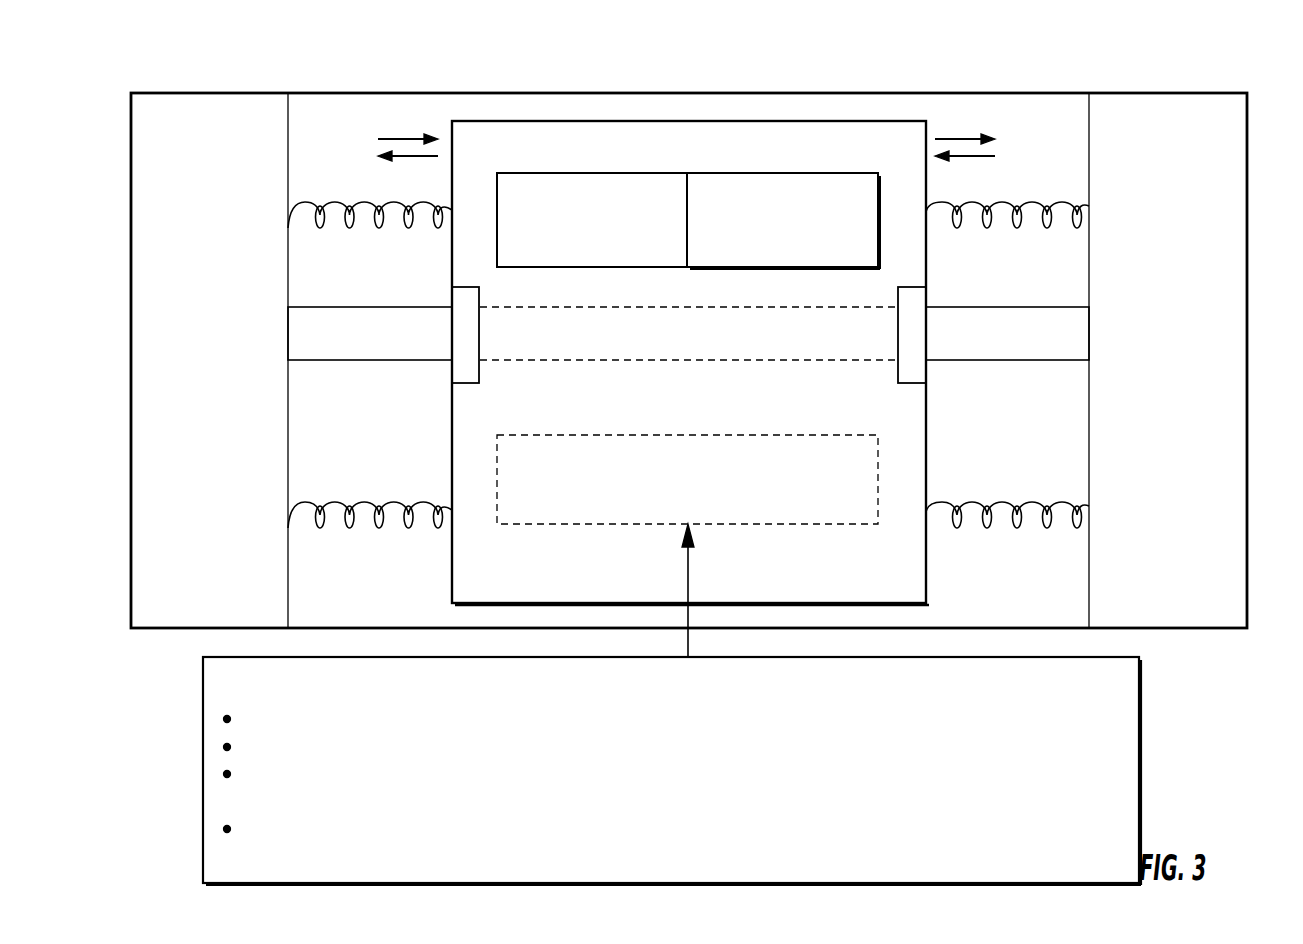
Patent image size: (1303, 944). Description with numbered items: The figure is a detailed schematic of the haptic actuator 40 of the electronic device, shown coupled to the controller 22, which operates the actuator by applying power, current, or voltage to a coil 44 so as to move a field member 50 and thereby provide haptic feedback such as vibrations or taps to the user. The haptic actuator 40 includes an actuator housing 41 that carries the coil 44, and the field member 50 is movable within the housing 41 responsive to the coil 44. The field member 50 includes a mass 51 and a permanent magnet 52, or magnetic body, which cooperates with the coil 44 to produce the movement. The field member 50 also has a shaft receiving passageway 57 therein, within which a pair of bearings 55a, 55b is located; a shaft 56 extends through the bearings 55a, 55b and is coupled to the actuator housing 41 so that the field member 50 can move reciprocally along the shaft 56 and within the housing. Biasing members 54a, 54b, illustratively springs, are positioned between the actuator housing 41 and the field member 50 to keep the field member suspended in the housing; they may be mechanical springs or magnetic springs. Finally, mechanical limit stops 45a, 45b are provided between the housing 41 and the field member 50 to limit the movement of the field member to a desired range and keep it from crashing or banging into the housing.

The controller 22 is at (203, 800).
The haptic actuator 40 is at (154, 76).
The actuator housing 41 is at (131, 228).
The coil 44 is at (555, 528).
The mechanical limit stop 45a is at (152, 373).
The mechanical limit stop 45b is at (1247, 580).
The field member 50 is at (532, 121).
The mass 51 is at (800, 173).
The permanent magnet 52 is at (532, 173).
The biasing member 54a is at (325, 203).
The biasing member 54b is at (1057, 203).
The bearing 55a is at (460, 383).
The bearing 55b is at (918, 383).
The shaft 56 is at (332, 360).
The shaft receiving passageway 57 is at (735, 360).